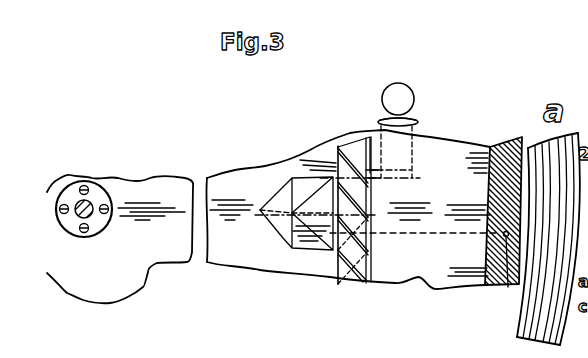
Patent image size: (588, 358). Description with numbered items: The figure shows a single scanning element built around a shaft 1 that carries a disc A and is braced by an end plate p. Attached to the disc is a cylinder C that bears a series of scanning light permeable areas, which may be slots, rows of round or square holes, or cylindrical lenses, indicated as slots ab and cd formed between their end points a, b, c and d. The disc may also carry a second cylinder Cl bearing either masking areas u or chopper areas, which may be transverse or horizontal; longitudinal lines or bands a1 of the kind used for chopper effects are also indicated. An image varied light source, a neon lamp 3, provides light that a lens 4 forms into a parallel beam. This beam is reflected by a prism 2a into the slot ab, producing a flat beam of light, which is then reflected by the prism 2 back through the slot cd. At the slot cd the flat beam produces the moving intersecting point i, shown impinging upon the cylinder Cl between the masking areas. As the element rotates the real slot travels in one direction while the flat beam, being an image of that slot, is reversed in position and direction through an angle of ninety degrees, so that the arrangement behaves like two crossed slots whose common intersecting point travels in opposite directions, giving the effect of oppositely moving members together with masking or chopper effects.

The shaft 1 is at (86, 186).
The end plate p is at (72, 230).
The prism 2 is at (287, 242).
The neon lamp 3 is at (403, 89).
The lens 4 is at (387, 120).
The prism 2a is at (305, 295).
The slot end a is at (410, 290).
The slot end b is at (372, 222).
The slot end c is at (340, 252).
The longitudinal lines or bands a1 is at (340, 240).
The cylinder C is at (341, 276).
The slot end d is at (366, 276).
The disc A is at (380, 278).
The intersecting point i is at (506, 234).
The masking areas u is at (508, 287).
The cylinder Cl is at (486, 284).